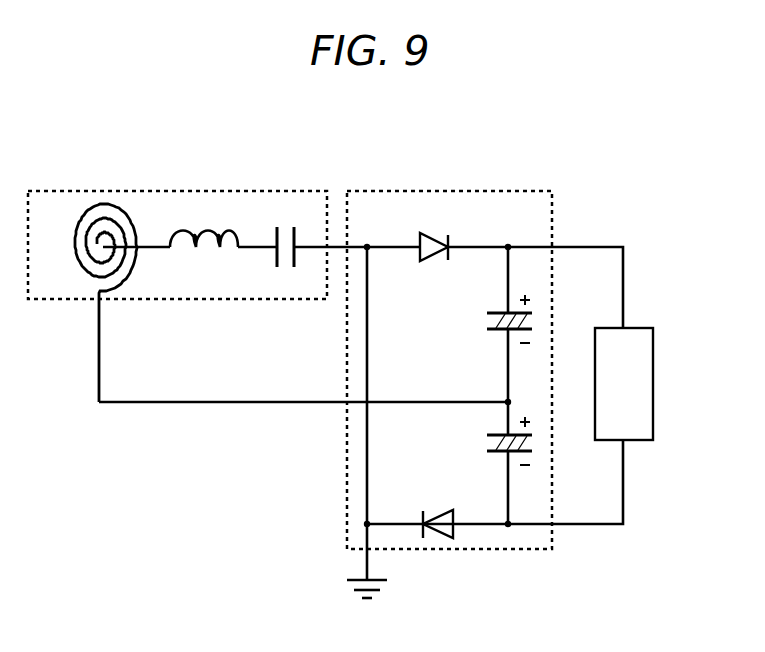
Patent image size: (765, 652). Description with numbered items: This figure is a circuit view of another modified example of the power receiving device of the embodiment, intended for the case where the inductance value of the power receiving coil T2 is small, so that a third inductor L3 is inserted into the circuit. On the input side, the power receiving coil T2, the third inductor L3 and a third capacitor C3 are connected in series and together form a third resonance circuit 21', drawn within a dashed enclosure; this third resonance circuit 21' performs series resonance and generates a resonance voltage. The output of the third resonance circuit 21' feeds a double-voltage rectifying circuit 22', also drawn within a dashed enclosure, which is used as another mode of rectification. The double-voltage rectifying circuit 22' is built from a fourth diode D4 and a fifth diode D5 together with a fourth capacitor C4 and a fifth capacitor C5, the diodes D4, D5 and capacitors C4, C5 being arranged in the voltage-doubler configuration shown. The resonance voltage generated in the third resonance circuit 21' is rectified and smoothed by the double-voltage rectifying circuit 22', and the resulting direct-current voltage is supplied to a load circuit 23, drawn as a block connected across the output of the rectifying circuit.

The power receiving coil T2 is at (103, 198).
The third resonance circuit 21' is at (177, 218).
The double-voltage rectifying circuit 22' is at (449, 343).
The third inductor L3 is at (205, 265).
The third capacitor C3 is at (287, 270).
The fourth diode D4 is at (432, 262).
The fourth capacitor C4 is at (487, 322).
The fifth capacitor C5 is at (487, 440).
The fifth diode D5 is at (440, 510).
The load circuit 23 is at (653, 397).